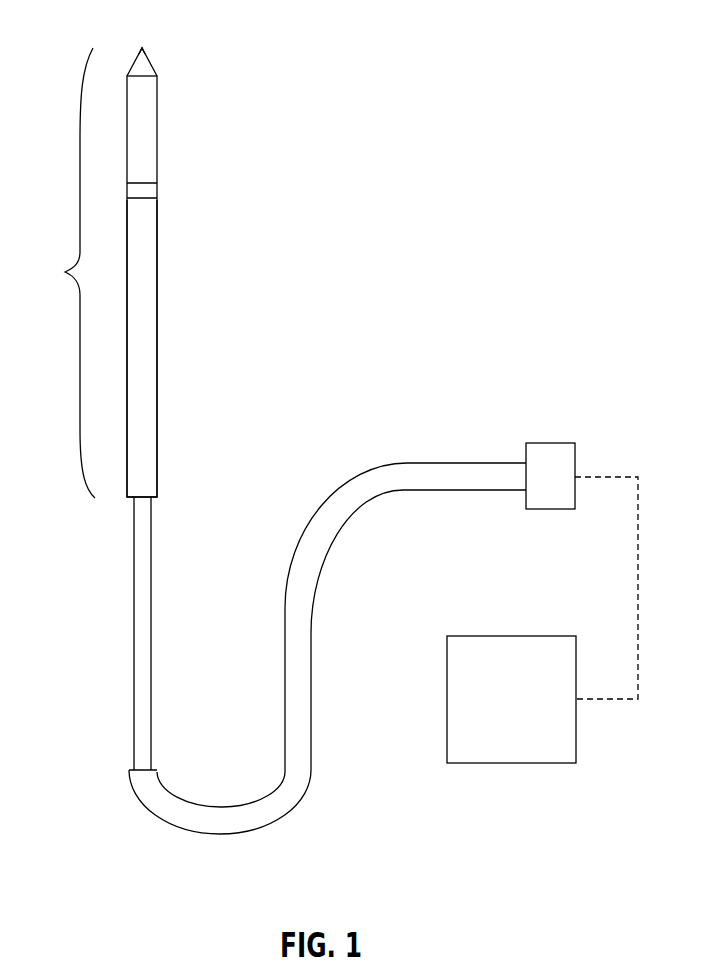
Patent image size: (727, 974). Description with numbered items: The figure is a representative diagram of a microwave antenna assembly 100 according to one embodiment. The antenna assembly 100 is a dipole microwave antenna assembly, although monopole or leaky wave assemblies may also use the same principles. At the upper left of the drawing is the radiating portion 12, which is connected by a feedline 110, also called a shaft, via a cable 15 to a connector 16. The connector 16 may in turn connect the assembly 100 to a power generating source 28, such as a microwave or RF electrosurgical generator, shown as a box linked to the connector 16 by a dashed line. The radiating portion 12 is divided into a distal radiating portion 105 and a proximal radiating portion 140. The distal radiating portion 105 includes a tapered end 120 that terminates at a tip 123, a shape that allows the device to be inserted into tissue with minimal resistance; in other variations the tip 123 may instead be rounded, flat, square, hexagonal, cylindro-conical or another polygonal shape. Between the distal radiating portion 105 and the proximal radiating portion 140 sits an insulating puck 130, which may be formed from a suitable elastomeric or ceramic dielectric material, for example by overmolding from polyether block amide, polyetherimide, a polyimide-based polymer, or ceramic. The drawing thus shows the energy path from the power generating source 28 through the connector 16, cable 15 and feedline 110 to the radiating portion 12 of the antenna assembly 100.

The microwave antenna assembly 100 is at (412, 139).
The radiating portion 12 is at (66, 273).
The distal radiating portion 105 is at (187, 128).
The feedline 110 is at (134, 590).
The tapered end 120 is at (142, 50).
The tip 123 is at (142, 50).
The insulating puck 130 is at (157, 190).
The proximal radiating portion 140 is at (188, 366).
The cable 15 is at (213, 836).
The connector 16 is at (550, 443).
The power generating source 28 is at (576, 725).